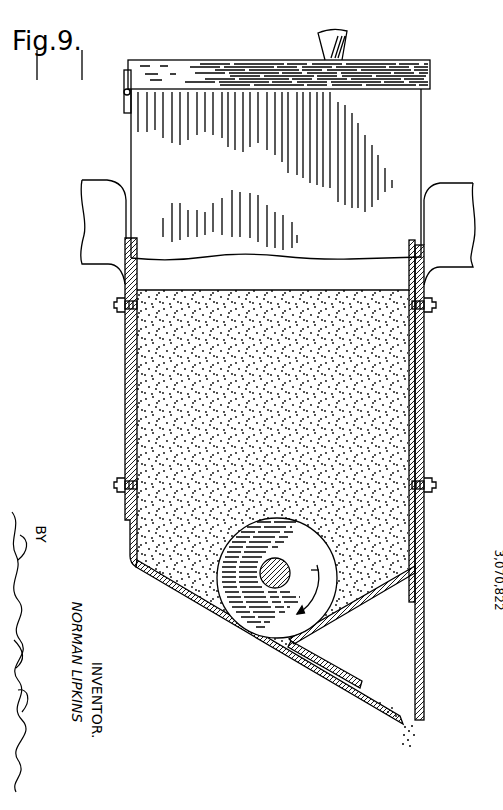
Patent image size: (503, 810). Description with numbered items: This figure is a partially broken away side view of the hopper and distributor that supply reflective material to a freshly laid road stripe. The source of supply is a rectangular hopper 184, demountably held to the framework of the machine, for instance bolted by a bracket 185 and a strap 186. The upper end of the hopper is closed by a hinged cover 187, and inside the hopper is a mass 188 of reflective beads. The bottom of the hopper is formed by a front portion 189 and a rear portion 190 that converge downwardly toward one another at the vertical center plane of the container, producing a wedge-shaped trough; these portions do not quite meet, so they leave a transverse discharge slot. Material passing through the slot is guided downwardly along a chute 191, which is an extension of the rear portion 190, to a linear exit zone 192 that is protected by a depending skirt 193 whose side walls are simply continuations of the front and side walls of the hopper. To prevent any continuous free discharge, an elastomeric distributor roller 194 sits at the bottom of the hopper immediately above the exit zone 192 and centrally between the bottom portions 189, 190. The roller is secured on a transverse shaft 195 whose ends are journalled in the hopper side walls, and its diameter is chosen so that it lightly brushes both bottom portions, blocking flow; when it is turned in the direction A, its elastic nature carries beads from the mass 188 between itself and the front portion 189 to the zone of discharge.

The rectangular hopper 184 is at (440, 147).
The bracket 185 is at (93, 239).
The strap 186 is at (126, 404).
The hinged cover 187 is at (428, 72).
The mass of reflective beads 188 is at (300, 293).
The front portion of hopper bottom 189 is at (346, 610).
The rear portion of hopper bottom 190 is at (193, 602).
The chute 191 is at (360, 694).
The linear exit zone 192 is at (403, 723).
The depending skirt 193 is at (424, 668).
The elastomeric distributor roller 194 is at (252, 538).
The transverse shaft 195 is at (279, 561).